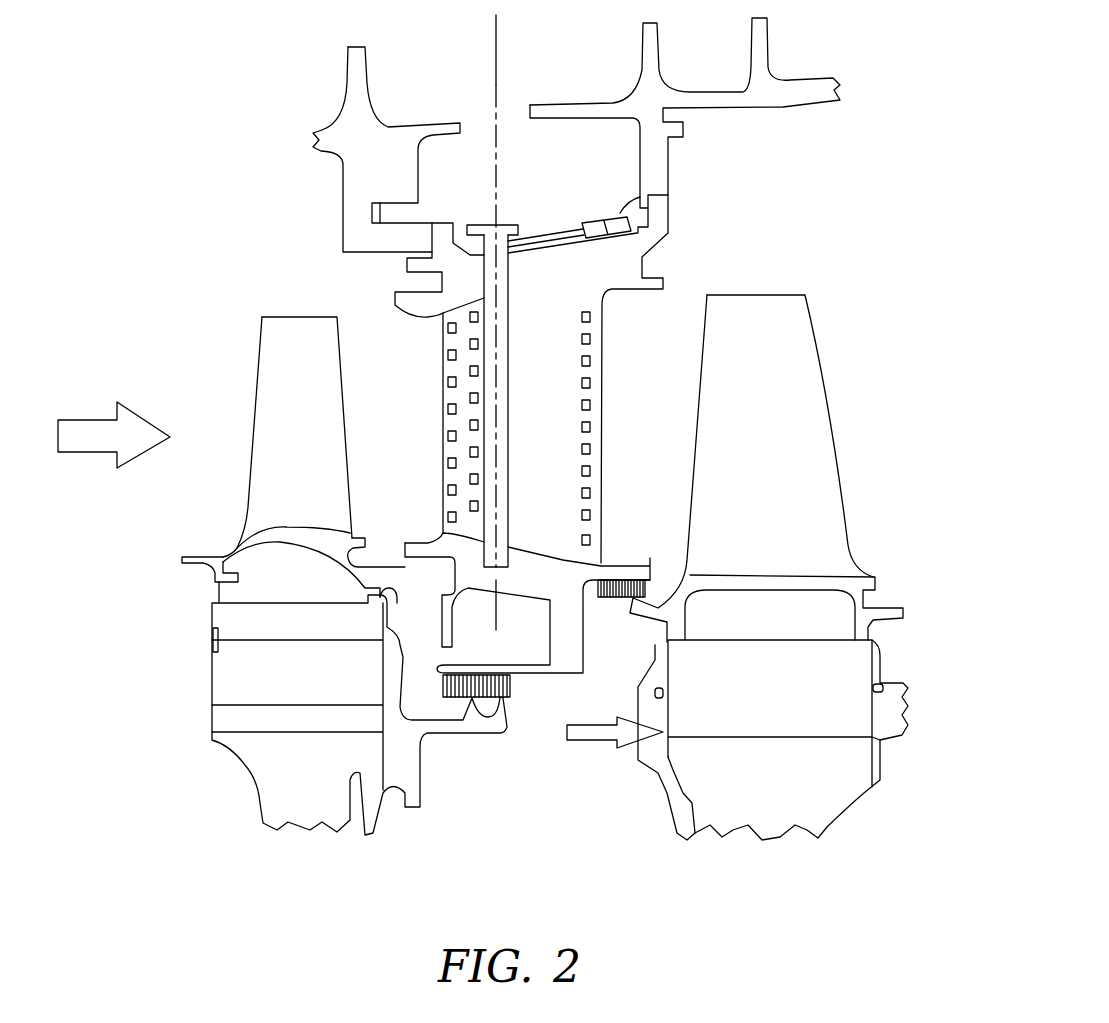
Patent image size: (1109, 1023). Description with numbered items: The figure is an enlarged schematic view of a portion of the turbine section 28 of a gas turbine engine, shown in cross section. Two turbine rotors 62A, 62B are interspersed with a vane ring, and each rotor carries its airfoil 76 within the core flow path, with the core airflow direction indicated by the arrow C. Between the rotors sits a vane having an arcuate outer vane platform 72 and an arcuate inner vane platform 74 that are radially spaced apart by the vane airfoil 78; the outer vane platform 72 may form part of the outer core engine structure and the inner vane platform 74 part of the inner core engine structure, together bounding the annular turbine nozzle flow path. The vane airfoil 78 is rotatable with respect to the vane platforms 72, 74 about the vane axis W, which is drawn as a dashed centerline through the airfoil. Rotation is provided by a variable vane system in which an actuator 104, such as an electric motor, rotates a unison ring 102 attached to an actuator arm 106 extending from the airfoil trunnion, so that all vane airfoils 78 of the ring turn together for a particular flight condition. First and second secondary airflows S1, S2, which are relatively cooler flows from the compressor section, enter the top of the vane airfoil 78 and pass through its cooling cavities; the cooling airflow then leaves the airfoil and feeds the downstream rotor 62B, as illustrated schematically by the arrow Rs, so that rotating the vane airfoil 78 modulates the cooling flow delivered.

The turbine section 28 is at (852, 184).
The rotor 62A is at (228, 412).
The rotor 62B is at (858, 372).
The outer vane platform 72 is at (658, 230).
The inner vane platform 74 is at (627, 563).
The airfoil 76 is at (290, 317).
The vane airfoil 78 is at (563, 410).
The unison ring 102 is at (590, 217).
The actuator 104 is at (622, 212).
The actuator arm 106 is at (543, 230).
The vane axis W is at (495, 43).
The first secondary airflow S1 is at (488, 208).
The second secondary airflow S2 is at (503, 208).
The core flow direction C is at (82, 418).
The rotor purge feed arrows Rs is at (587, 740).